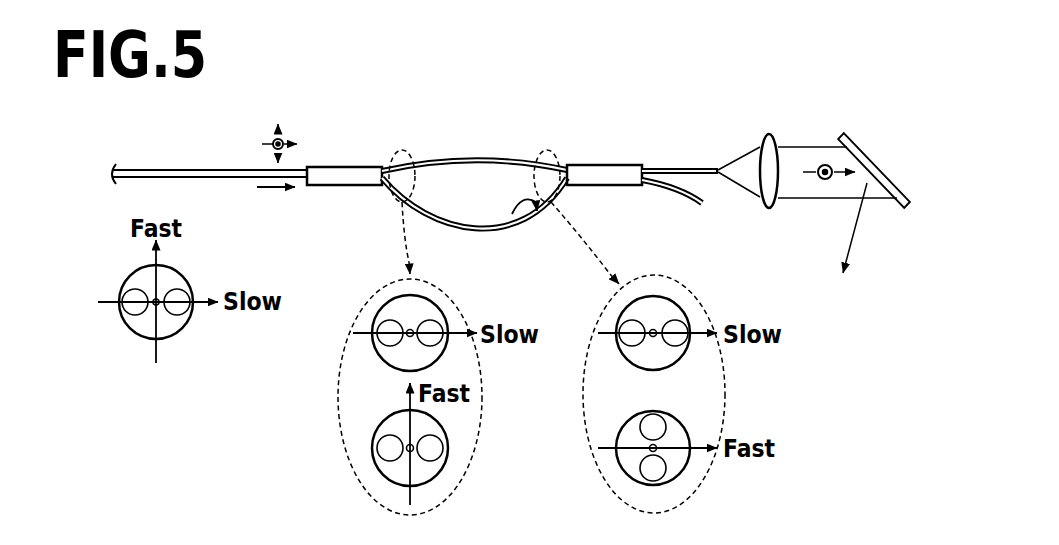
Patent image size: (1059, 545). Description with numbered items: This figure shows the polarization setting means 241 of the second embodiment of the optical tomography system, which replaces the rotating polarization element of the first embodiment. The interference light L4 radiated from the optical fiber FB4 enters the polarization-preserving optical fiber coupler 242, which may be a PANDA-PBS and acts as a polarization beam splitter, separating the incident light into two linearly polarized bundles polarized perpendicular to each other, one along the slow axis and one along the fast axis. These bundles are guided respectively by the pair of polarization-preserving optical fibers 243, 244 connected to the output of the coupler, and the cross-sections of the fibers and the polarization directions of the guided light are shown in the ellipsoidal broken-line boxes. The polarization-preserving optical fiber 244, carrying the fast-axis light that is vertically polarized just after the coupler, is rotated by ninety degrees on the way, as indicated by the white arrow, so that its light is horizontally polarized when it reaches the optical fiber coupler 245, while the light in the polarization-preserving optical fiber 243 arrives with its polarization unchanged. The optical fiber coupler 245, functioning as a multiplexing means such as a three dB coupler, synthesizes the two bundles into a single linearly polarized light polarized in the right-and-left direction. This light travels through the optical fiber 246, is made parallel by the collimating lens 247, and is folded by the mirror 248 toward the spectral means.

The optical fiber FB4 is at (212, 168).
The interference light L4 is at (276, 204).
The polarization setting means 241 is at (586, 91).
The polarization-preserving optical fiber coupler 242 is at (363, 166).
The polarization-preserving optical fiber 243 is at (494, 164).
The polarization-preserving optical fiber 244 is at (507, 229).
The optical fiber coupler 245 is at (637, 148).
The optical fiber 246 is at (715, 148).
The collimating lens 247 is at (767, 137).
The mirror 248 is at (866, 129).